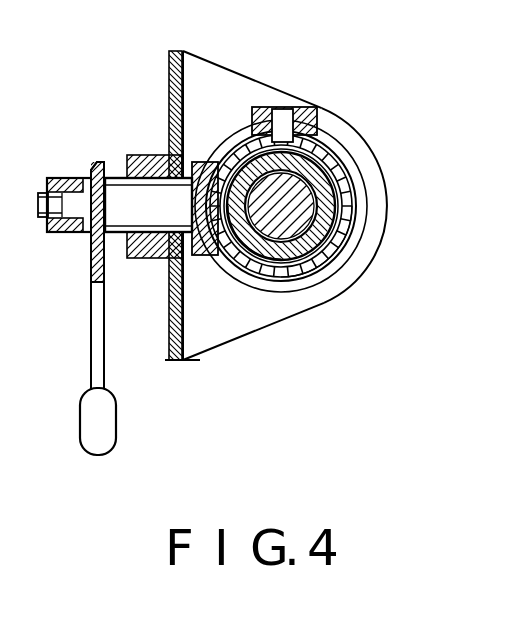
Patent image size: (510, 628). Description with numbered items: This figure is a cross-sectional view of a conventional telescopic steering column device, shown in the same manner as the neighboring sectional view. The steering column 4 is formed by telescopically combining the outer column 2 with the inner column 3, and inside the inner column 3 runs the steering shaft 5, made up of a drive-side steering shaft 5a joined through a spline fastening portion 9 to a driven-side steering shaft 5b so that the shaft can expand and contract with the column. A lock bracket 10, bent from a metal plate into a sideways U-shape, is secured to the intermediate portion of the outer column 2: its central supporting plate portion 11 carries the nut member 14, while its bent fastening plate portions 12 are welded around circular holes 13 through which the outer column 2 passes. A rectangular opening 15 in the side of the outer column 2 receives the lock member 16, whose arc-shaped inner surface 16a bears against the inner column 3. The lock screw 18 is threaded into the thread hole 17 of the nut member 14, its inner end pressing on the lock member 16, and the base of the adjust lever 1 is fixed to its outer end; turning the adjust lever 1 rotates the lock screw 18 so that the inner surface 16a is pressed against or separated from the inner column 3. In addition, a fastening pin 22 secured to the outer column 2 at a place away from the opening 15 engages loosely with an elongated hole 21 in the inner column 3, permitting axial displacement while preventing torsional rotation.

The adjust lever 1 is at (90, 325).
The outer column 2 is at (346, 124).
The inner column 3 is at (370, 143).
The steering column 4 is at (355, 170).
The steering shaft 5 is at (333, 210).
The drive-side steering shaft 5a is at (370, 265).
The driven-side steering shaft 5b is at (312, 290).
The spline fastening portion 9 is at (355, 232).
The lock bracket 10 is at (168, 70).
The supporting plate portion 11 is at (168, 125).
The fastening plate portion 12 is at (248, 88).
The circular hole 13 is at (345, 285).
The nut member 14 is at (150, 262).
The rectangular opening 15 is at (235, 262).
The lock member 16 is at (195, 258).
The inner surface 16a is at (232, 160).
The thread hole 17 is at (130, 198).
The lock screw 18 is at (108, 177).
The elongated hole 21 is at (312, 120).
The fastening pin 22 is at (291, 120).